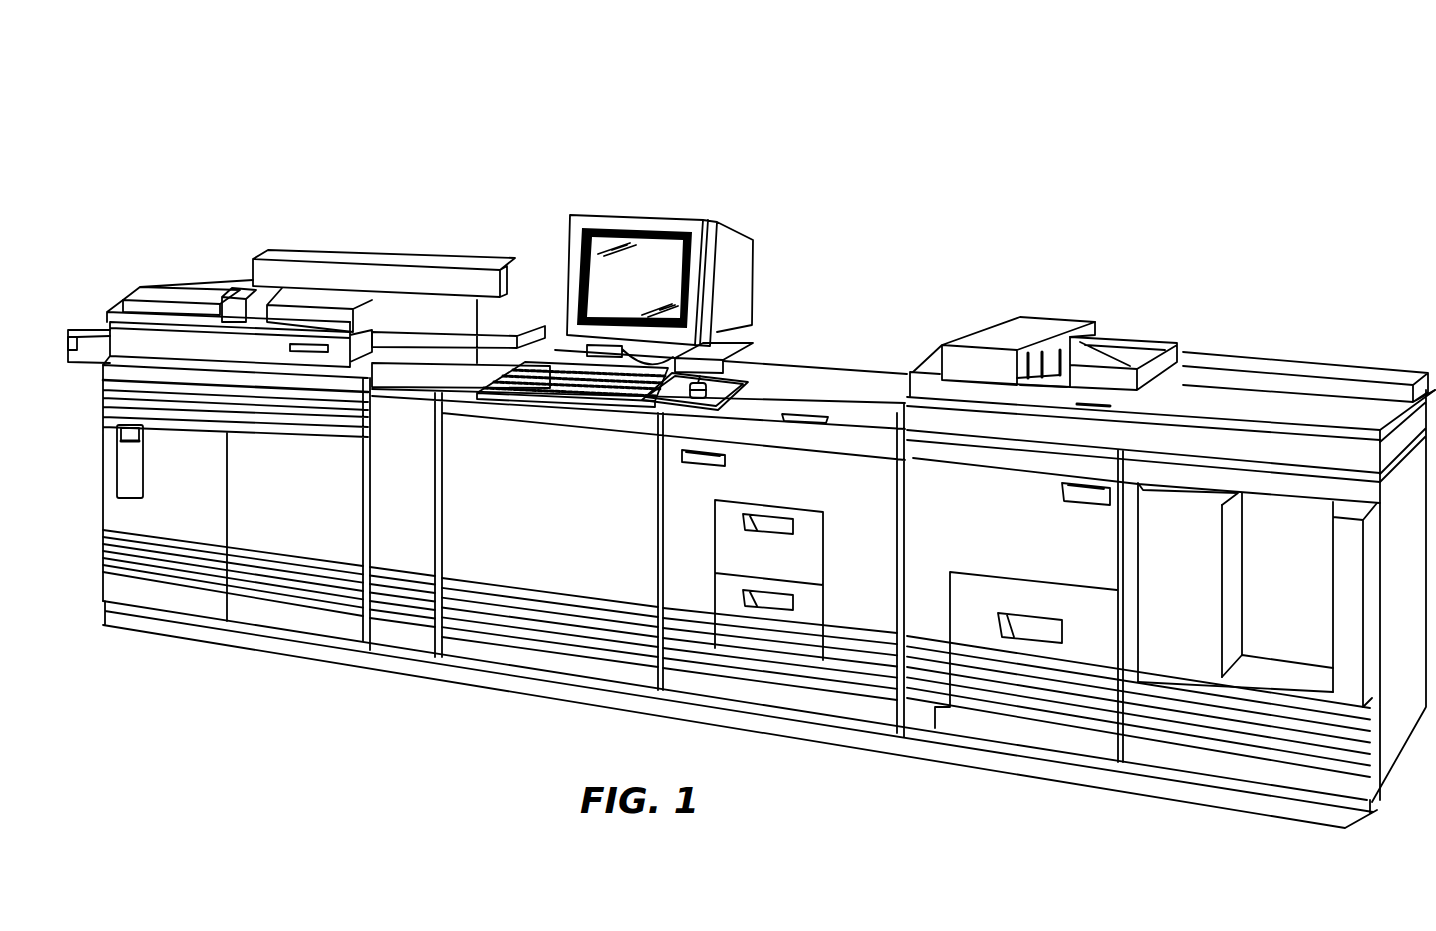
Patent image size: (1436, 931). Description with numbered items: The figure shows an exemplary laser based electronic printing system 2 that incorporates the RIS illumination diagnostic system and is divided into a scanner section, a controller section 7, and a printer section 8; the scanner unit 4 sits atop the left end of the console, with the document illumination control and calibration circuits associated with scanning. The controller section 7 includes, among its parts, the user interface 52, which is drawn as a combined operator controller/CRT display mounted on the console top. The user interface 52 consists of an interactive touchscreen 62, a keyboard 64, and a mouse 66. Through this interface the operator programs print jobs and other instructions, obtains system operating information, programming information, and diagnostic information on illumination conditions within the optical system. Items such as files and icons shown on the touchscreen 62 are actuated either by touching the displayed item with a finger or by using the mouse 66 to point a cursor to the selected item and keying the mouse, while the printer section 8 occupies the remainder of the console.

The printing system 2 is at (905, 103).
The scanner section 4 is at (361, 238).
The controller section 7 is at (92, 511).
The printer section 8 is at (872, 286).
The user interface 52 is at (616, 319).
The interactive touchscreen 62 is at (598, 290).
The keyboard 64 is at (556, 400).
The mouse 66 is at (664, 410).